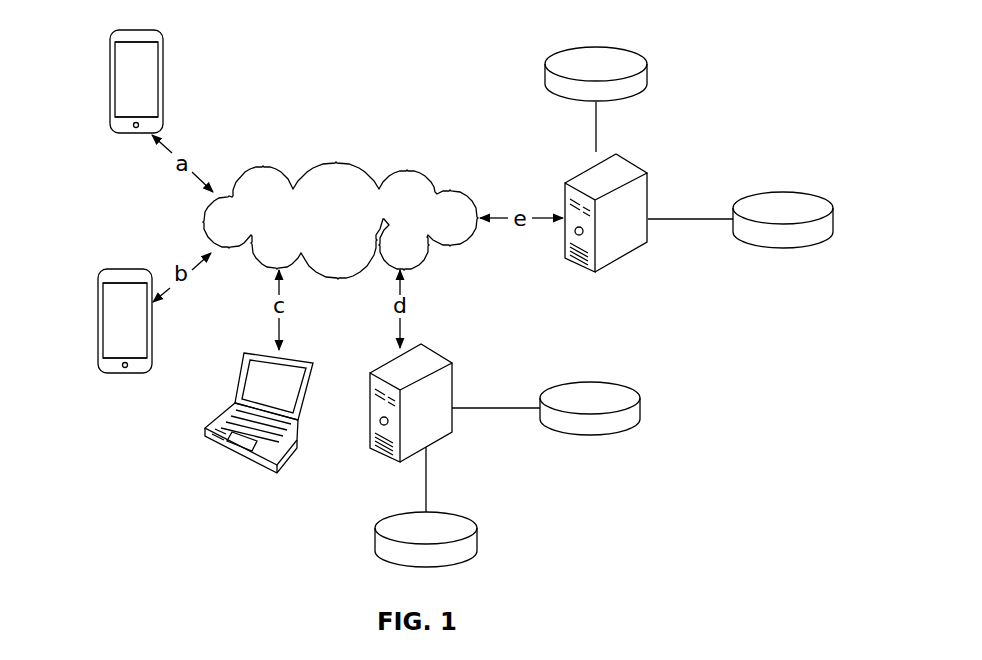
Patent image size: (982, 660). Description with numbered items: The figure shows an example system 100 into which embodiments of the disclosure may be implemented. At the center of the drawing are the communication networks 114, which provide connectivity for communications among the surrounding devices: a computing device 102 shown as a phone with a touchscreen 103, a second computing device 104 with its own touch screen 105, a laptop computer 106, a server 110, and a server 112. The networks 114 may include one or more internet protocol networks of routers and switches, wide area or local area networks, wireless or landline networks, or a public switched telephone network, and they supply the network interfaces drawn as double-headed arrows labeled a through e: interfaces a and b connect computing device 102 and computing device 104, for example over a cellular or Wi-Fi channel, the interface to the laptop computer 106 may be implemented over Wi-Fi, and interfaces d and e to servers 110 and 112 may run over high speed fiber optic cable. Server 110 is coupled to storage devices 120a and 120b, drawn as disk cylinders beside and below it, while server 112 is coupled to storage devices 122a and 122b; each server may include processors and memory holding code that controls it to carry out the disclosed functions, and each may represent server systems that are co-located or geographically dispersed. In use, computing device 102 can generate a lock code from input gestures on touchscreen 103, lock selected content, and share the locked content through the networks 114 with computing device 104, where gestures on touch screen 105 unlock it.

The system 100 is at (754, 58).
The computing device 102 is at (137, 29).
The touchscreen 103 is at (136, 83).
The computing device 104 is at (123, 376).
The touch screen 105 is at (125, 329).
The laptop computer 106 is at (227, 447).
The server 110 is at (453, 385).
The server 112 is at (649, 193).
The communication networks 114 is at (342, 162).
The storage device 120a is at (590, 380).
The storage device 120b is at (375, 538).
The storage device 122a is at (596, 46).
The storage device 122b is at (785, 192).